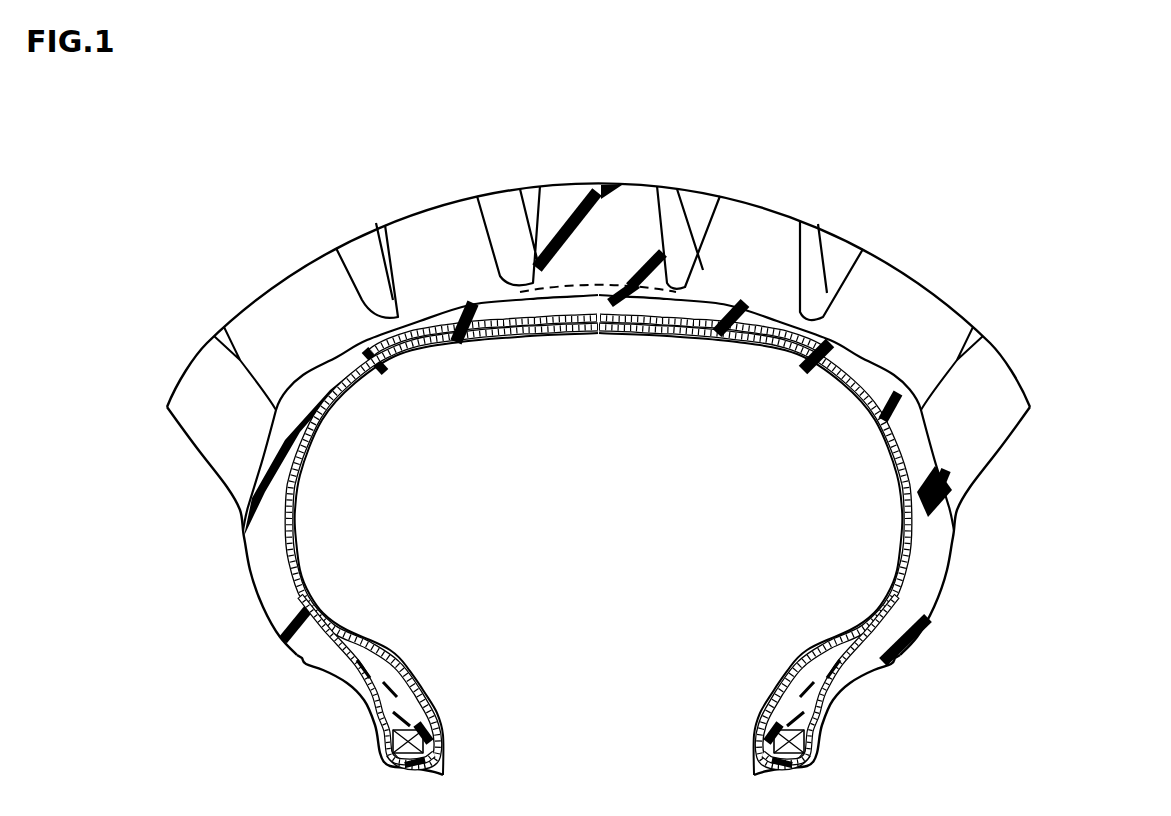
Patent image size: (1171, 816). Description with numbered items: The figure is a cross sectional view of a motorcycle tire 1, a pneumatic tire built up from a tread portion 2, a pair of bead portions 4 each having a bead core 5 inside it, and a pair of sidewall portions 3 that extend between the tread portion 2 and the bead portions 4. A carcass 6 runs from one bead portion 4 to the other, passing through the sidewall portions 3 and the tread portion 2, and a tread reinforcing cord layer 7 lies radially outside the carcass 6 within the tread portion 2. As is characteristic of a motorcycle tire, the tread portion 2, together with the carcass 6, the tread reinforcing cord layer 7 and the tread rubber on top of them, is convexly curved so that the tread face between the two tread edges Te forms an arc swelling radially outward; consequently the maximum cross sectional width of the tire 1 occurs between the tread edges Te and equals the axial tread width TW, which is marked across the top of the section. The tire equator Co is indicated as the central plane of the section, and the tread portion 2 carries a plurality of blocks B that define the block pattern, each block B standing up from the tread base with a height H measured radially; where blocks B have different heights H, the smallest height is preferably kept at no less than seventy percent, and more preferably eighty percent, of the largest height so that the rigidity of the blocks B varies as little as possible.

The motorcycle tire 1 is at (913, 175).
The tread portion 2 is at (920, 244).
The sidewall portions 3 is at (284, 667).
The bead portions 4 is at (457, 716).
The bead core 5 is at (395, 743).
The carcass 6 is at (900, 557).
The tread reinforcing cord layer 7 is at (672, 310).
The blocks B is at (442, 232).
The block height H is at (598, 284).
The tire equator Co is at (598, 347).
The axial tread width TW is at (170, 75).
The tread edges Te is at (160, 421).